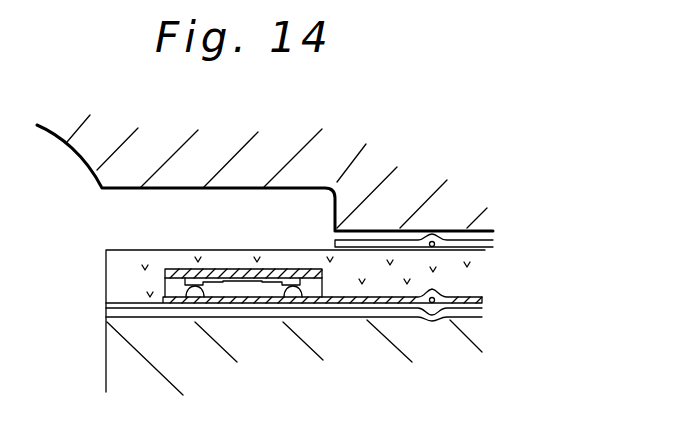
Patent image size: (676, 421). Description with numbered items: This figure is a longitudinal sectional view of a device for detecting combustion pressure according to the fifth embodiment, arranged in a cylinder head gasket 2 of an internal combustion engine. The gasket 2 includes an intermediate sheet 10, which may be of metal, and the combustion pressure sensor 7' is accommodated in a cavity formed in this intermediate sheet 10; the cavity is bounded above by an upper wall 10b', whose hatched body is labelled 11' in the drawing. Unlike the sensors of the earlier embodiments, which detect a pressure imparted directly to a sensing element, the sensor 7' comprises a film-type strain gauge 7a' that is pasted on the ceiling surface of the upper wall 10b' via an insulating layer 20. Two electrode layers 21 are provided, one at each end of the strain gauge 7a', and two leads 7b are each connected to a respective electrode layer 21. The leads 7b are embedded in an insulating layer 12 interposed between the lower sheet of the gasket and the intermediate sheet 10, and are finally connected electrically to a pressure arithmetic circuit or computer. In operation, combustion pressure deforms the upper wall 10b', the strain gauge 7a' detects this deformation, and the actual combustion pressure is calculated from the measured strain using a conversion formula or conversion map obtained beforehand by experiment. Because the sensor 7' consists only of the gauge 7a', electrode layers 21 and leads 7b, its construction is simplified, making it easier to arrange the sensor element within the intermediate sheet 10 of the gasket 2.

The cylinder head gasket 2 is at (578, 257).
The combustion pressure sensor 7' is at (263, 270).
The film-type strain gauge 7a' is at (262, 182).
The leads 7b is at (300, 293).
The intermediate sheet 10 is at (482, 258).
The upper wall 10b' is at (374, 181).
The upper body 11' is at (265, 161).
The insulating layer 12 is at (482, 296).
The insulating layer 20 is at (185, 268).
The electrode layers 21 is at (189, 297).